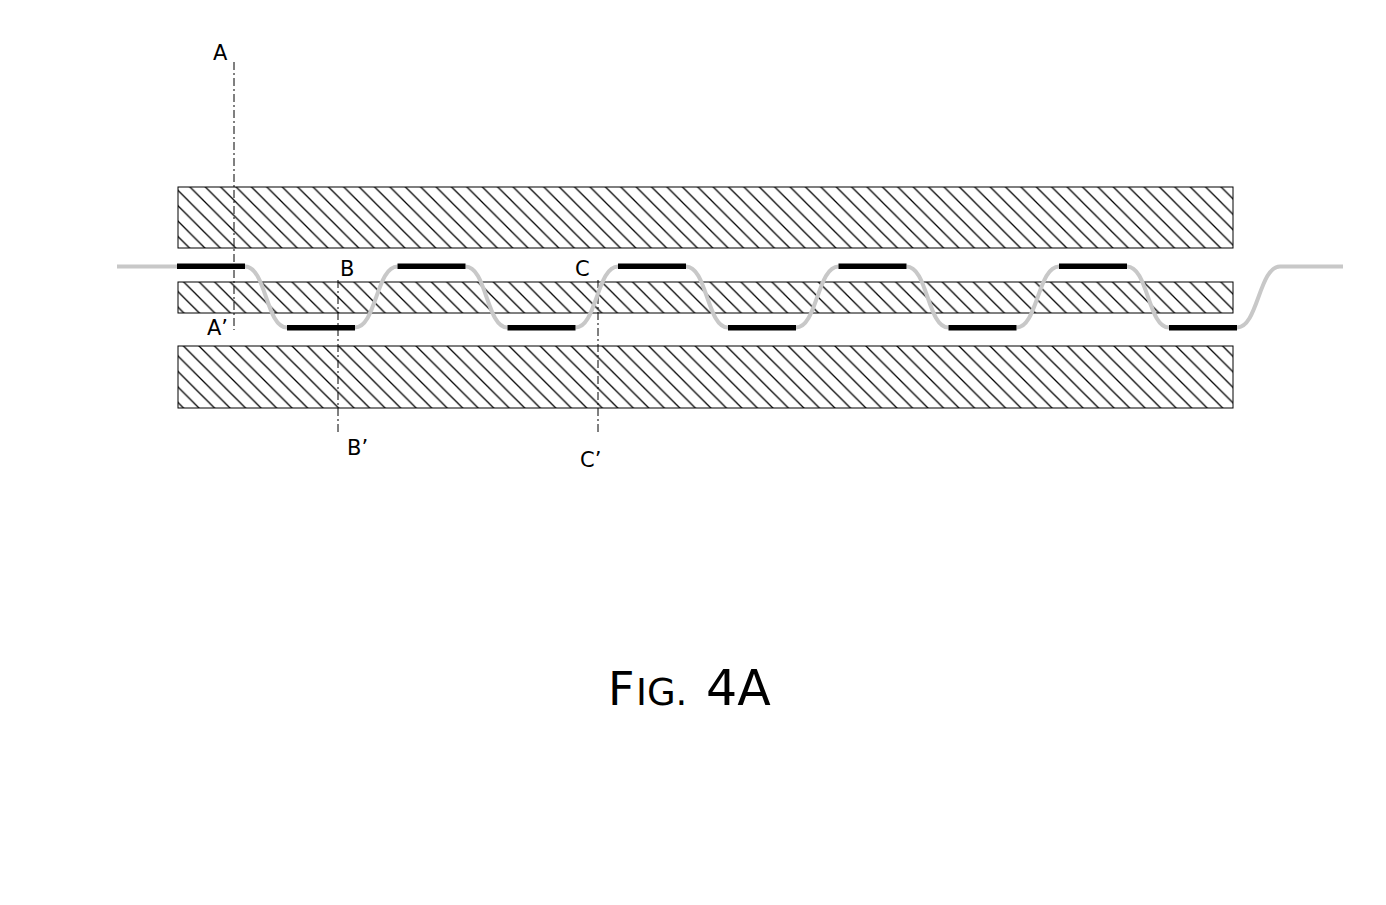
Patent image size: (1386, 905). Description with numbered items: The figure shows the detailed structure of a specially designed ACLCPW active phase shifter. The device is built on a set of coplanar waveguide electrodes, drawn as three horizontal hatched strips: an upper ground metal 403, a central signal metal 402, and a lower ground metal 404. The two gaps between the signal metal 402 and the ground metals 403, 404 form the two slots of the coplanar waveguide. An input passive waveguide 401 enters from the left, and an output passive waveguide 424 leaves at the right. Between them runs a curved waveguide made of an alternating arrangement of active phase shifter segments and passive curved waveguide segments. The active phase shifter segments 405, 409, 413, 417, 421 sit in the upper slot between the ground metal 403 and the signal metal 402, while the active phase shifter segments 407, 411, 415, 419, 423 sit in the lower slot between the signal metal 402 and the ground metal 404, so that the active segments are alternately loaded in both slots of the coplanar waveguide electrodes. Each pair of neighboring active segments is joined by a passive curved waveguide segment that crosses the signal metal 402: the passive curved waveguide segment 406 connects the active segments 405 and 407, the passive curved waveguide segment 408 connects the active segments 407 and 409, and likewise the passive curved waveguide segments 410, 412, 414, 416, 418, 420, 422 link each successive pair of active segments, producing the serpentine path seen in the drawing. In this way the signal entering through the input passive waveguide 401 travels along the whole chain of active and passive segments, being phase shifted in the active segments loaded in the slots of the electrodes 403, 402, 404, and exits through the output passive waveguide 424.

The input passive waveguide 401 is at (142, 264).
The signal metal 402 is at (173, 295).
The ground metal 403 is at (196, 217).
The ground metal 404 is at (212, 385).
The active phase shifter segment 405 is at (213, 263).
The passive curved waveguide segment 406 is at (260, 271).
The active phase shifter segment 407 is at (322, 334).
The passive curved waveguide segment 408 is at (385, 271).
The active phase shifter segment 409 is at (432, 263).
The passive curved waveguide segment 410 is at (479, 271).
The active phase shifter segment 411 is at (542, 334).
The passive curved waveguide segment 412 is at (611, 271).
The active phase shifter segment 413 is at (652, 263).
The passive curved waveguide segment 414 is at (698, 271).
The active phase shifter segment 415 is at (762, 334).
The passive curved waveguide segment 416 is at (824, 271).
The active phase shifter segment 417 is at (872, 263).
The passive curved waveguide segment 418 is at (918, 271).
The active phase shifter segment 419 is at (982, 334).
The passive curved waveguide segment 420 is at (1043, 271).
The active phase shifter segment 421 is at (1090, 263).
The passive curved waveguide segment 422 is at (1137, 271).
The active phase shifter segment 423 is at (1194, 334).
The output passive waveguide 424 is at (1295, 259).